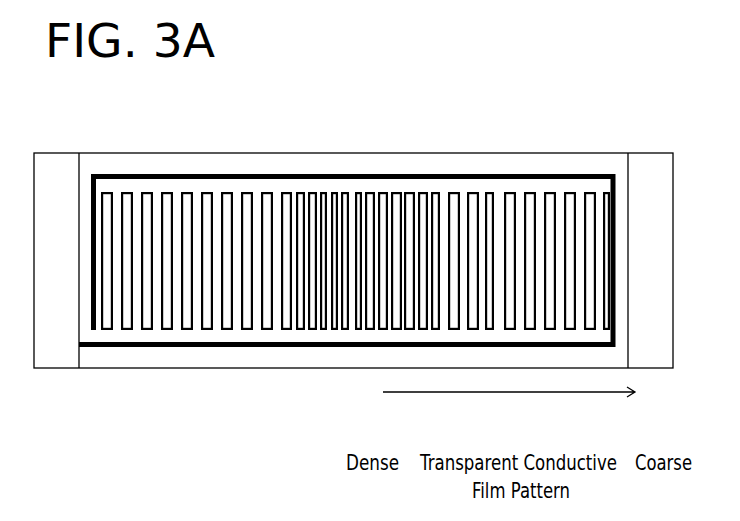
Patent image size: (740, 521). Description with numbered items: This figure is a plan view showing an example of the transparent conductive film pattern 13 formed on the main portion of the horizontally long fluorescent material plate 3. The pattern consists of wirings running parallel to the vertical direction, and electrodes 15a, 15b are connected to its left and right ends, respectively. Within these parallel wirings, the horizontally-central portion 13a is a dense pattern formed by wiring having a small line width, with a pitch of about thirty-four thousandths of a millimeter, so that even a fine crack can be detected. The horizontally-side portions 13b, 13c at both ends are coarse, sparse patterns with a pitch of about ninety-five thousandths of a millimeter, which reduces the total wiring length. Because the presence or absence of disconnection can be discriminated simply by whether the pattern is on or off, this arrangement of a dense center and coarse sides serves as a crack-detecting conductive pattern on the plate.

The fluorescent material plate 3 is at (193, 368).
The transparent conductive film pattern 13 is at (332, 302).
The horizontally-central portion 13a is at (357, 192).
The horizontally-side portion 13b is at (185, 192).
The horizontally-side portion 13c is at (510, 192).
The electrode 15a is at (55, 363).
The electrode 15b is at (650, 370).